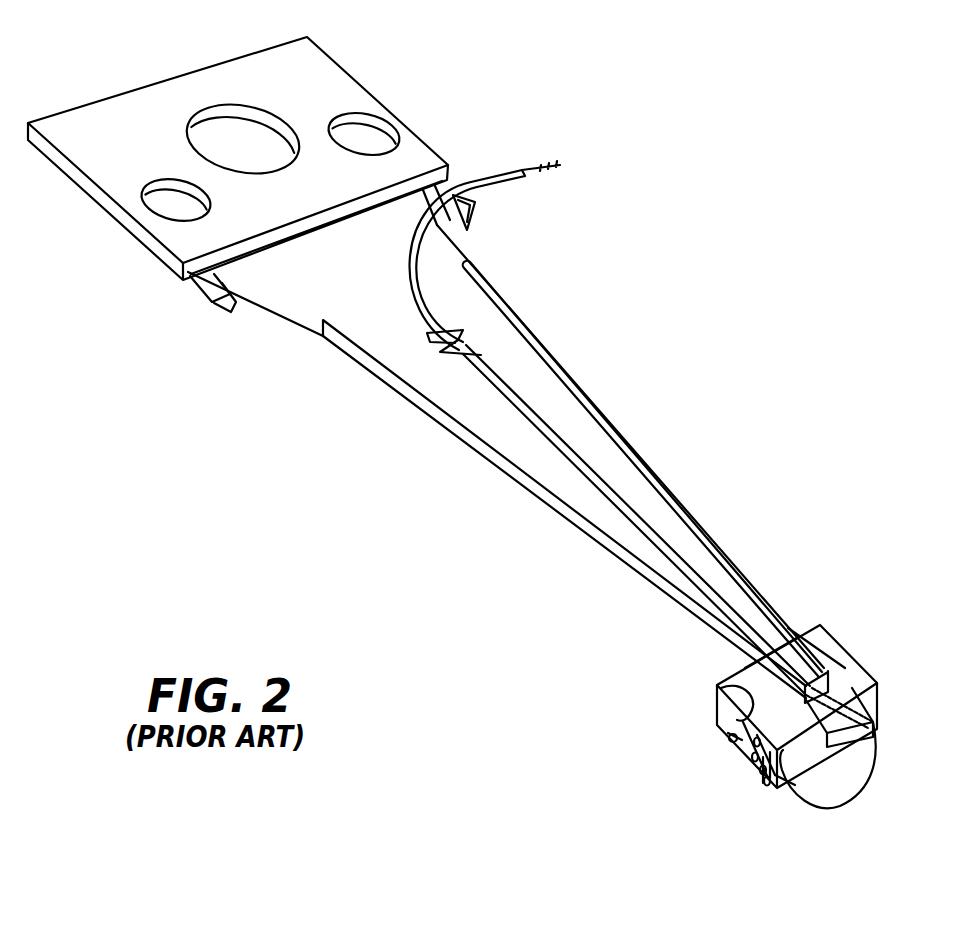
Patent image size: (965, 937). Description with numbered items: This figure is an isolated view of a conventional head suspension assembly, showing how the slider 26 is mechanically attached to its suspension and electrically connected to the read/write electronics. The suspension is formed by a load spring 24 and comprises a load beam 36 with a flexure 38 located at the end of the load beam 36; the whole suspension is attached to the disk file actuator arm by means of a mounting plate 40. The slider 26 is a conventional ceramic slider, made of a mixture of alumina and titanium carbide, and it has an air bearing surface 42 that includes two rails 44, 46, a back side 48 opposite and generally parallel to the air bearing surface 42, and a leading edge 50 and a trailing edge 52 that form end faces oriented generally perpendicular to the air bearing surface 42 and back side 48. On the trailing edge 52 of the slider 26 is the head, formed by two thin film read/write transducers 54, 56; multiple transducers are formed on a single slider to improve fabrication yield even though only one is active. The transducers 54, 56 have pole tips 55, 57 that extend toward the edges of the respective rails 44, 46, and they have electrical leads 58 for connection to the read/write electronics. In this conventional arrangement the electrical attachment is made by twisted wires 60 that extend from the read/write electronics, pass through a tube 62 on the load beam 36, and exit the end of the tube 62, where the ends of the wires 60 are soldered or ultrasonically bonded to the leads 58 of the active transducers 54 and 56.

The load spring 24 is at (443, 422).
The slider 26 is at (878, 663).
The load beam 36 is at (590, 420).
The flexure 38 is at (878, 700).
The mounting plate 40 is at (348, 78).
The air bearing surface 42 is at (750, 772).
The rail 44 is at (850, 804).
The rail 46 is at (731, 745).
The back side 48 is at (837, 650).
The leading edge 50 is at (822, 627).
The trailing edge 52 is at (717, 697).
The thin film read/write transducer 54 is at (783, 785).
The pole tip 55 is at (763, 788).
The thin film read/write transducer 56 is at (717, 712).
The pole tip 57 is at (730, 740).
The electrical leads 58 is at (743, 690).
The twisted wires 60 is at (538, 180).
The tube 62 is at (497, 378).